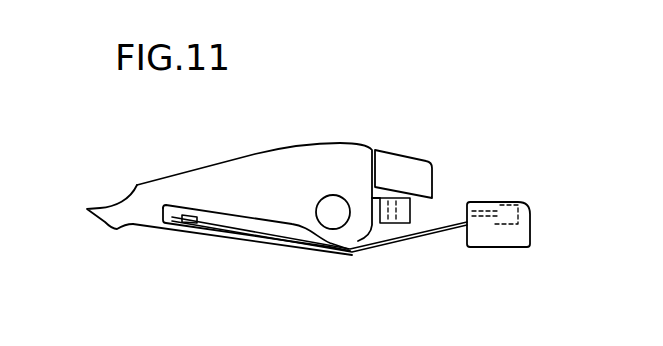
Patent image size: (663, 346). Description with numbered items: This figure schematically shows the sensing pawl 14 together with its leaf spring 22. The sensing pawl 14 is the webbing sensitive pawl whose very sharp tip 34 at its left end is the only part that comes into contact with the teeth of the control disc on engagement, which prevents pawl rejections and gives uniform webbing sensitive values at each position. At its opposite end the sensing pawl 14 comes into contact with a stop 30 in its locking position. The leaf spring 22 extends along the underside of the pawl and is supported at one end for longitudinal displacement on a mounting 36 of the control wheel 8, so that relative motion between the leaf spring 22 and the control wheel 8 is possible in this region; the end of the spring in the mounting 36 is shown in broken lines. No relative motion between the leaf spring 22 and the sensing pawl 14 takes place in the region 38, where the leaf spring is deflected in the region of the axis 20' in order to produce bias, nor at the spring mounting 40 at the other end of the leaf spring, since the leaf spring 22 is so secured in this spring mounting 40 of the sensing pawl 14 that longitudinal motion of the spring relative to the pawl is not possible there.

The control wheel 8 is at (522, 226).
The sensing pawl 14 is at (284, 156).
The axis 20' is at (356, 250).
The leaf spring 22 is at (432, 233).
The stop 30 is at (416, 165).
The tip 34 is at (94, 209).
The mounting 36 is at (472, 220).
The region 38 is at (328, 254).
The spring mounting 40 is at (188, 224).